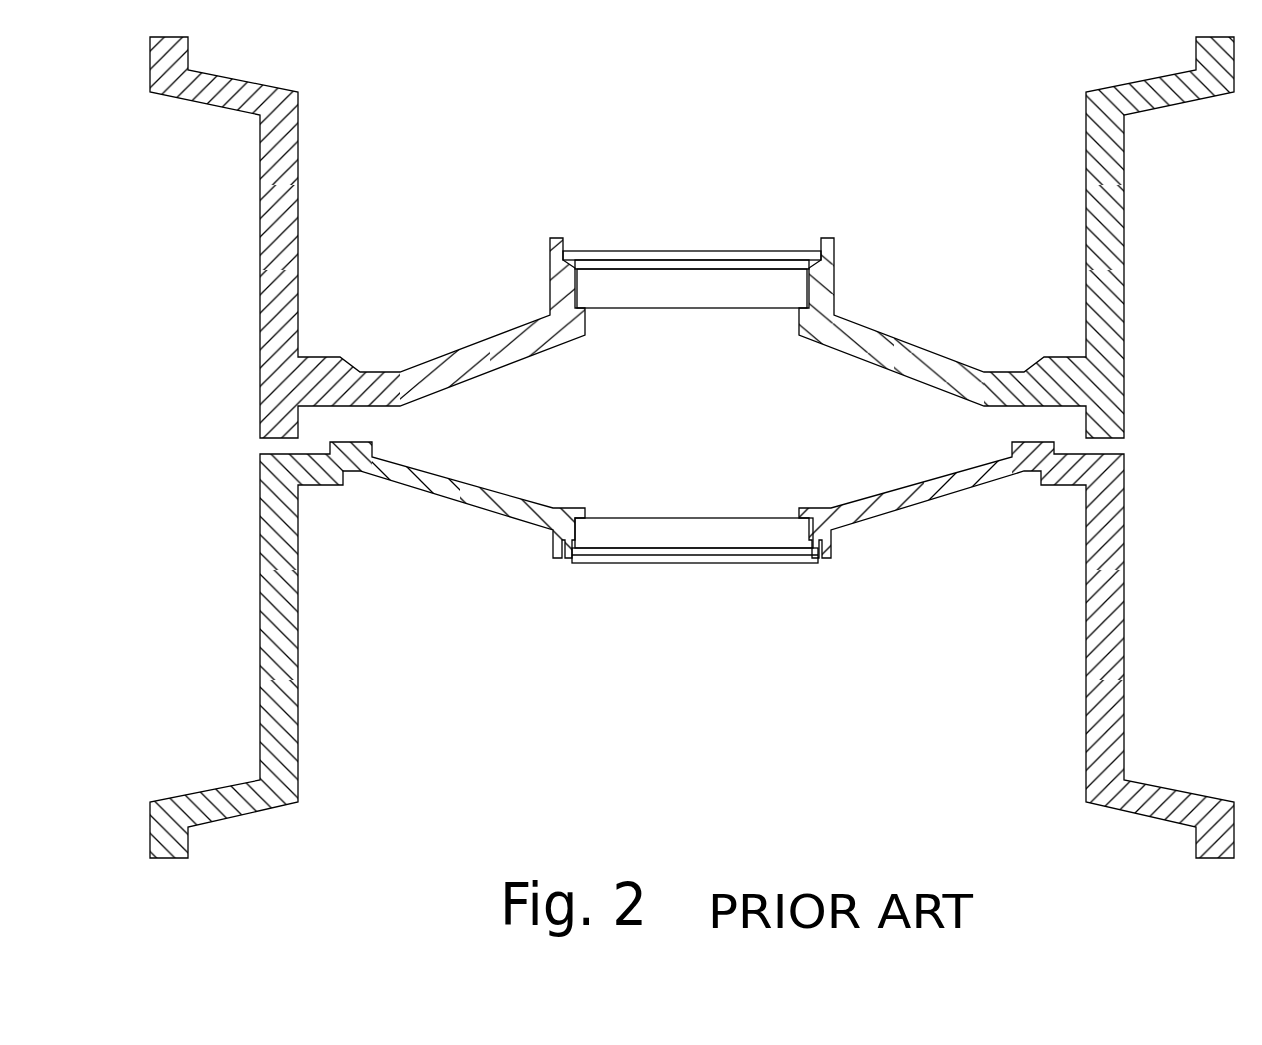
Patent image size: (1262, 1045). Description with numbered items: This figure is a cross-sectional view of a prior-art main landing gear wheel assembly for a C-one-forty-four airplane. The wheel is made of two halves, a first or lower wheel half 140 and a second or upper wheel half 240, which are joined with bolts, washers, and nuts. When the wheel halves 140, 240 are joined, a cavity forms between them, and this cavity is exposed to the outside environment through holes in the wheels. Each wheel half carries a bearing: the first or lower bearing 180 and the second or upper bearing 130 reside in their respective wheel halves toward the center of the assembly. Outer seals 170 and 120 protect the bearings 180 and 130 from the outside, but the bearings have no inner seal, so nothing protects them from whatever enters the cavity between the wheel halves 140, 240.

The second/upper wheel half 240 is at (257, 115).
The first/lower wheel half 140 is at (258, 780).
The outer seal 170 is at (705, 250).
The first/lower bearing 180 is at (767, 300).
The second/upper bearing 130 is at (608, 518).
The outer seal 120 is at (648, 558).